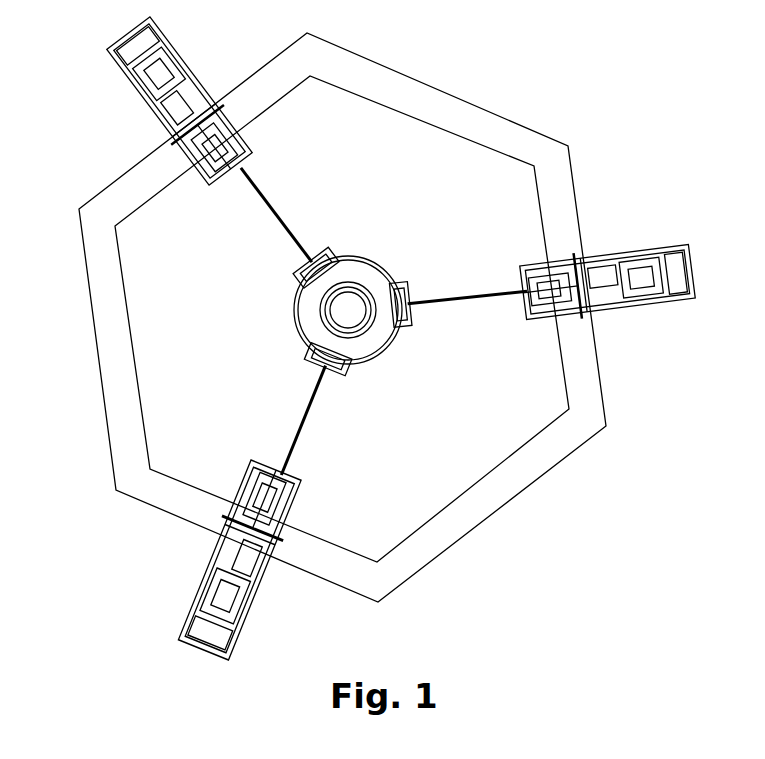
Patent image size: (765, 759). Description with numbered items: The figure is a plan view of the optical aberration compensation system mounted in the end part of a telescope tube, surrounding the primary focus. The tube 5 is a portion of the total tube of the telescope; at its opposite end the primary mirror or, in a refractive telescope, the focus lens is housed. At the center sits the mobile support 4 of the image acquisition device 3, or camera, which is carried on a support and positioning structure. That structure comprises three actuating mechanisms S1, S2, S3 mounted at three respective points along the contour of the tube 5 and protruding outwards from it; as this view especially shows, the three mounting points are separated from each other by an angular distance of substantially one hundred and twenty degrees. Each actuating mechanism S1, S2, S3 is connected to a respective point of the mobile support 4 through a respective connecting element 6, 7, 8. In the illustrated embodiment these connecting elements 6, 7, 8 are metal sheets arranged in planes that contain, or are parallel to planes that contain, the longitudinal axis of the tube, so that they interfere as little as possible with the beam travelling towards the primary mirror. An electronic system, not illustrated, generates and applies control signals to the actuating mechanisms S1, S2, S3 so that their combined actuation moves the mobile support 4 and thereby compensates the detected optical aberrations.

The image acquisition device 3 is at (338, 318).
The mobile support 4 is at (392, 341).
The tube 5 is at (470, 524).
The connecting element 6 is at (452, 298).
The connecting element 7 is at (310, 420).
The connecting element 8 is at (275, 222).
The actuating mechanism S1 is at (612, 213).
The actuating mechanism S2 is at (286, 608).
The actuating mechanism S3 is at (134, 127).